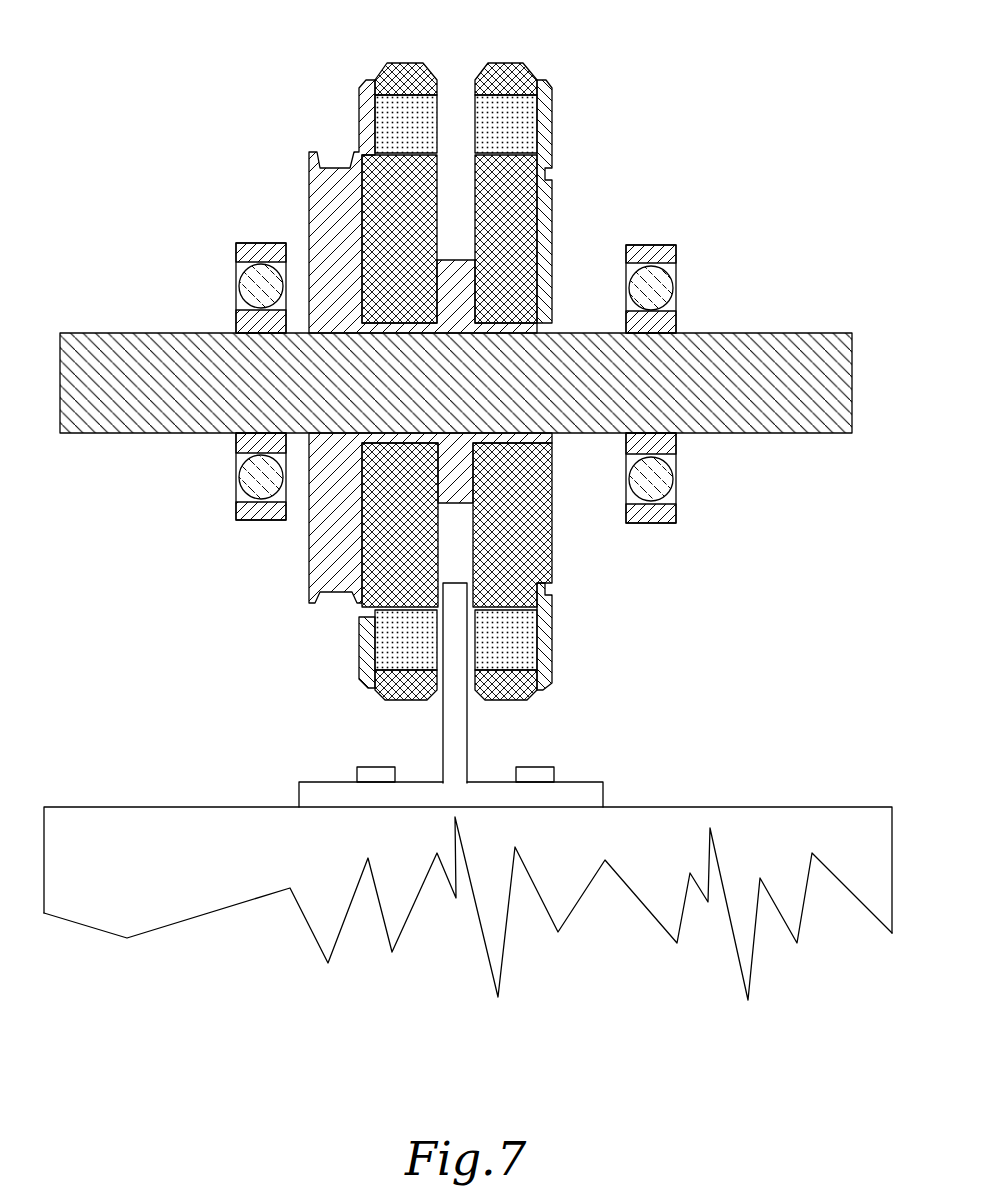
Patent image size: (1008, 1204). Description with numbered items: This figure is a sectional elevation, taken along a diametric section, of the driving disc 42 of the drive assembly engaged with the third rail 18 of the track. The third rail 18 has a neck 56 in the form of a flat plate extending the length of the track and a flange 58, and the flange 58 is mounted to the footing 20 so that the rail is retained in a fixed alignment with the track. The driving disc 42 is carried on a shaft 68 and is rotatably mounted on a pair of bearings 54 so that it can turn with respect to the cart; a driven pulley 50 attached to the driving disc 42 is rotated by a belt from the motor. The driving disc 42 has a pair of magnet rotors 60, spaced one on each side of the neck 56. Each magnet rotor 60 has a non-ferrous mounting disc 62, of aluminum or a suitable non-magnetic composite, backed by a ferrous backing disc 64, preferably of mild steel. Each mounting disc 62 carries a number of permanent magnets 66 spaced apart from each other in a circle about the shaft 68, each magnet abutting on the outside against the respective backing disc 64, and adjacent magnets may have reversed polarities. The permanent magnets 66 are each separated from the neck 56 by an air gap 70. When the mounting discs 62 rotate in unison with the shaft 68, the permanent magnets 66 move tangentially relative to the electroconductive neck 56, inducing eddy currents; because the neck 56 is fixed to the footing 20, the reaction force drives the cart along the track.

The third rail 18 is at (453, 695).
The footing 20 is at (770, 807).
The driving disc 42 is at (165, 70).
The driven pulley 50 is at (310, 185).
The bearings 54 is at (261, 521).
The neck 56 is at (468, 757).
The flange 58 is at (603, 795).
The magnet rotors 60 is at (376, 45).
The mounting disc 62 is at (392, 700).
The backing disc 64 is at (359, 630).
The permanent magnets 66 is at (383, 123).
The shaft 68 is at (788, 333).
The air gap 70 is at (434, 705).